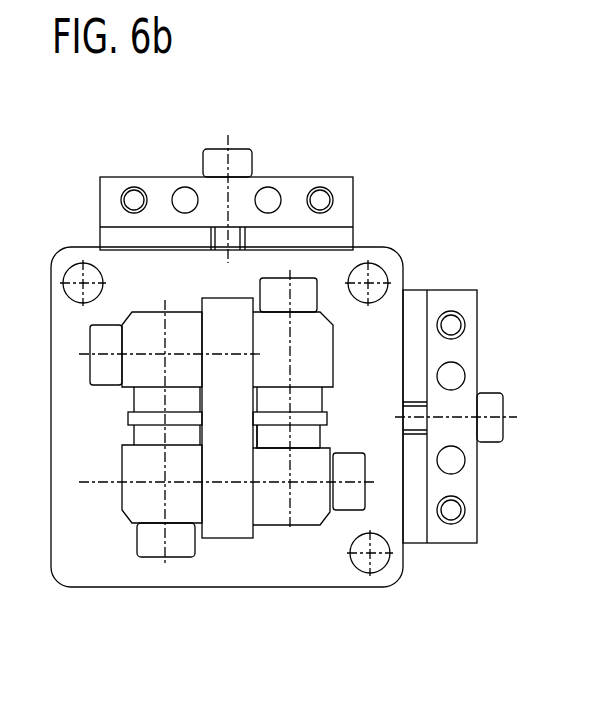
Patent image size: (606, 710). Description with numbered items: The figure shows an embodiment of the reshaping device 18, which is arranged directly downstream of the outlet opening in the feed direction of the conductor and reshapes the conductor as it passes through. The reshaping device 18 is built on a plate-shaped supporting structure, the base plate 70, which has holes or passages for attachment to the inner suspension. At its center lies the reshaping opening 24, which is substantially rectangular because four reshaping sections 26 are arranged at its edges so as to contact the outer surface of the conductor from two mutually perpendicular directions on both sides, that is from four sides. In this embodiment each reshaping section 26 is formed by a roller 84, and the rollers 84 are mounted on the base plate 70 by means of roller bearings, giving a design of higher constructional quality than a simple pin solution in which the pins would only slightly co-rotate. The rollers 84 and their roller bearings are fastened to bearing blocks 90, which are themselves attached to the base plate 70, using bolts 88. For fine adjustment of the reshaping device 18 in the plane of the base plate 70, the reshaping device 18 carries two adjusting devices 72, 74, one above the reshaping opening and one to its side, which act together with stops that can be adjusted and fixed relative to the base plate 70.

The reshaping device 18 is at (446, 188).
The reshaping opening 24 is at (217, 415).
The reshaping sections 26 is at (315, 435).
The base plate 70 is at (313, 578).
The adjusting device 72 is at (296, 158).
The adjusting device 74 is at (494, 485).
The roller 84 is at (227, 526).
The bolt 88 is at (145, 542).
The bearing block 90 is at (324, 333).